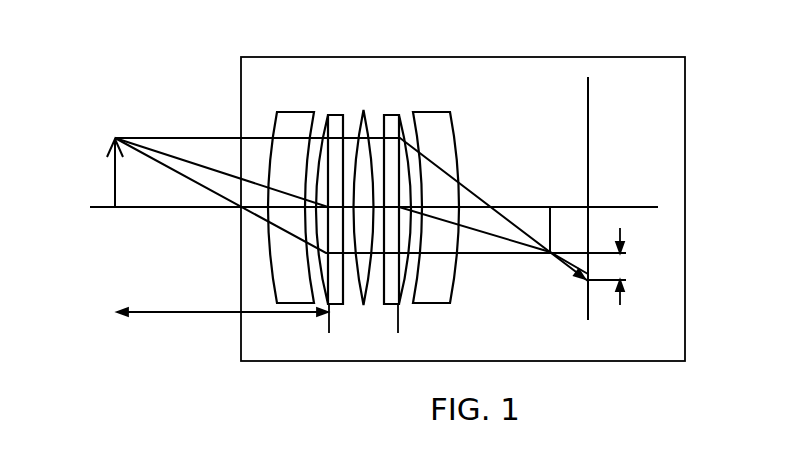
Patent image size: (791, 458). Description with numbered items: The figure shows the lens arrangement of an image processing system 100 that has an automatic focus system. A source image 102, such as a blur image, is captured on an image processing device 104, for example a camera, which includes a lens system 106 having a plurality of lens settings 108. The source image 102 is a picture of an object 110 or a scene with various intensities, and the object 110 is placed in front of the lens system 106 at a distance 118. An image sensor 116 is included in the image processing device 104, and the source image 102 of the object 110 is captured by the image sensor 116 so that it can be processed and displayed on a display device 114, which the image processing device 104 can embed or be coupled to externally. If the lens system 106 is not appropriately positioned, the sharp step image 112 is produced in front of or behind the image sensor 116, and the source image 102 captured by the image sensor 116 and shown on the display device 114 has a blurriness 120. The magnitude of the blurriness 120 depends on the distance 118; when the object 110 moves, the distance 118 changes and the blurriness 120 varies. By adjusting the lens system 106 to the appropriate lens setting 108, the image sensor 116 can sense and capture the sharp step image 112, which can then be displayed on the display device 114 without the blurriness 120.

The image processing system 100 is at (173, 45).
The source image 102 is at (594, 225).
The image processing device 104 is at (255, 55).
The lens system 106 is at (445, 92).
The lens setting 108 is at (433, 323).
The object 110 is at (91, 173).
The sharp step image 112 is at (556, 222).
The display device 114 is at (593, 120).
The image sensor 116 is at (585, 291).
The distance 118 is at (222, 324).
The blurriness 120 is at (612, 266).